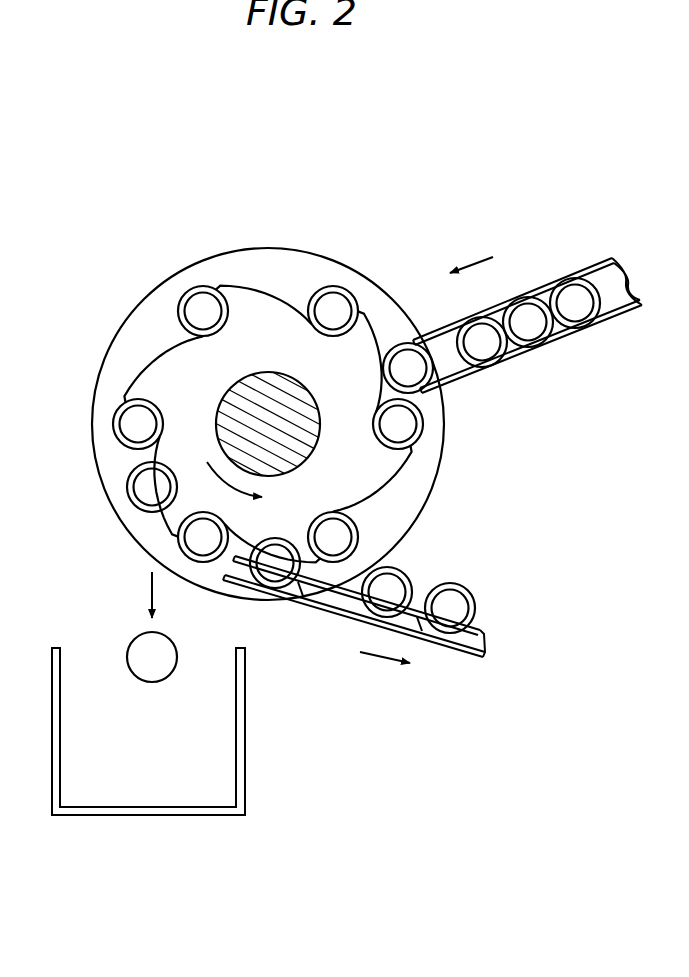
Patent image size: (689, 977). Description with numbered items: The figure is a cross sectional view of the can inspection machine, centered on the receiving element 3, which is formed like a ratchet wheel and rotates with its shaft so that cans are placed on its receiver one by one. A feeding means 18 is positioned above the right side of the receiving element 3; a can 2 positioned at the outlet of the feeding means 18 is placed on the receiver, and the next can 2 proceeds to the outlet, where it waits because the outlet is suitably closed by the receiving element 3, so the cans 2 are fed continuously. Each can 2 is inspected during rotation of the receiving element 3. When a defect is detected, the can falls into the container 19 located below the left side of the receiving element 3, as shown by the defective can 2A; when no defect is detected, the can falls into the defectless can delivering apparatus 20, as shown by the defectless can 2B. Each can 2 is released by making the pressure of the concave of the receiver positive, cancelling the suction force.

The can 2 is at (343, 288).
The receiving element 3 is at (145, 372).
The feeding means 18 is at (550, 282).
The defectless can delivering apparatus 20 is at (452, 648).
The container 19 is at (243, 693).
The defective can 2A is at (152, 683).
The defectless can 2B is at (405, 575).